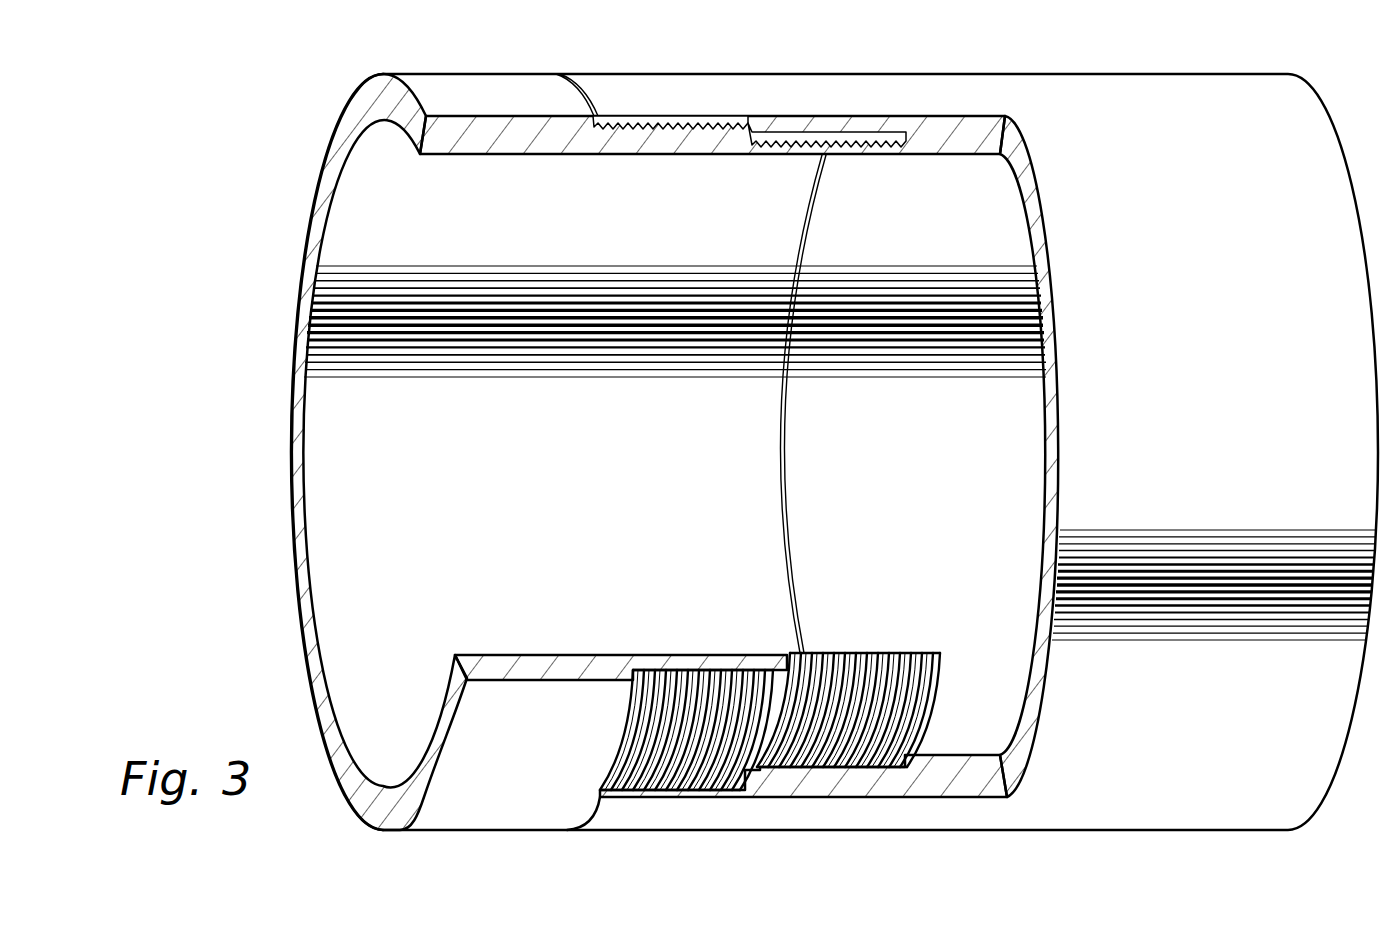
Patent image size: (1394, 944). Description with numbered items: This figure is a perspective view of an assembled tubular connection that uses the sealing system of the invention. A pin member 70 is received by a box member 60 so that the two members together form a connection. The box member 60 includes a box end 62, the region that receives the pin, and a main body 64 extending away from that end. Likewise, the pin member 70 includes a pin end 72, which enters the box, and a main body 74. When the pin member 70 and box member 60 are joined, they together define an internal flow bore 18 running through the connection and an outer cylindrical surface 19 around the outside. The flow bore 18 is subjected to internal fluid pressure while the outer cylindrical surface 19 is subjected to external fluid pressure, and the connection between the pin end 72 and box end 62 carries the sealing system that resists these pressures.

The outer cylindrical surface 19 is at (808, 73).
The flow bore 18 is at (612, 459).
The main body 74 is at (525, 653).
The box end 62 is at (672, 797).
The pin member 70 is at (859, 652).
The pin end 72 is at (904, 652).
The box member 60 is at (830, 784).
The main body 64 is at (975, 778).